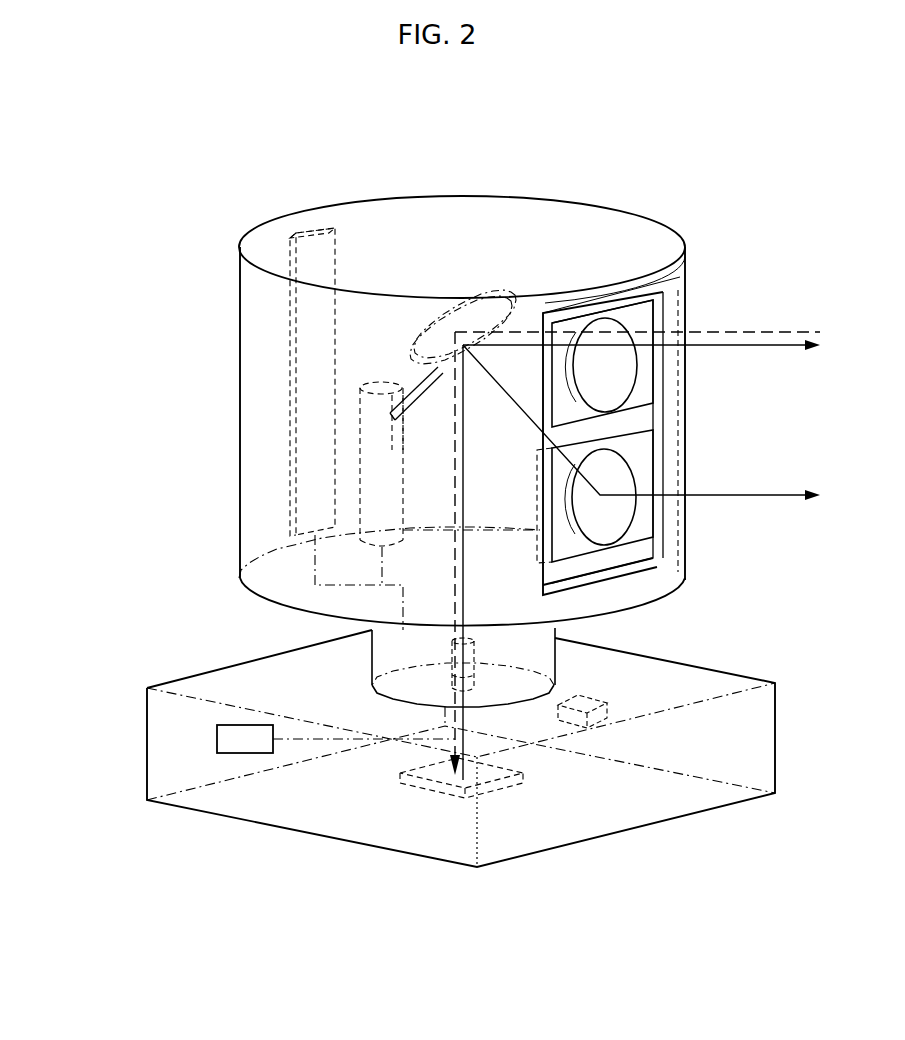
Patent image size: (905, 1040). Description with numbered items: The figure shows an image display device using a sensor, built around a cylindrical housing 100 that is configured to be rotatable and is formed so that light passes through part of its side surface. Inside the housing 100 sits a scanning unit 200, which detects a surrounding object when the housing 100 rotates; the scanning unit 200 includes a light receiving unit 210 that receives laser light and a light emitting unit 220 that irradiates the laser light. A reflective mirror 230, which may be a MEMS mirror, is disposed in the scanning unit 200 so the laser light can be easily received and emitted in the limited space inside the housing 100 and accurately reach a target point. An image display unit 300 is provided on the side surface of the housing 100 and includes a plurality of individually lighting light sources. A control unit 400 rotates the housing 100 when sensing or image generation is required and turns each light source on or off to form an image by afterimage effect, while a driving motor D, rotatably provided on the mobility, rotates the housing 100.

The housing 100 is at (606, 206).
The scanning unit 200 is at (543, 825).
The light receiving unit 210 is at (500, 785).
The light emitting unit 220 is at (477, 673).
The reflective mirror 230 is at (443, 325).
The image display unit 300 is at (320, 270).
The control unit 400 is at (232, 739).
The driving motor D is at (592, 700).